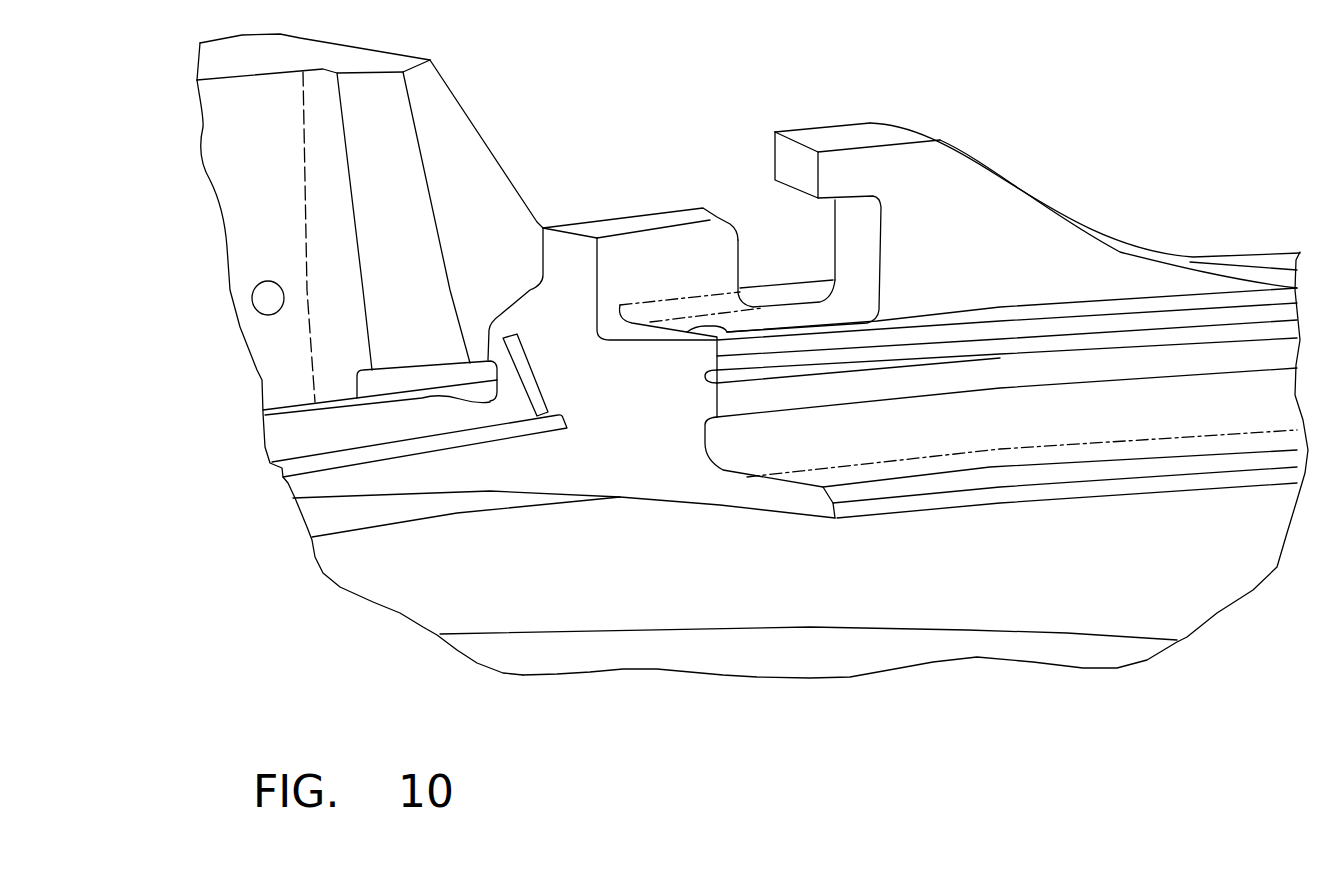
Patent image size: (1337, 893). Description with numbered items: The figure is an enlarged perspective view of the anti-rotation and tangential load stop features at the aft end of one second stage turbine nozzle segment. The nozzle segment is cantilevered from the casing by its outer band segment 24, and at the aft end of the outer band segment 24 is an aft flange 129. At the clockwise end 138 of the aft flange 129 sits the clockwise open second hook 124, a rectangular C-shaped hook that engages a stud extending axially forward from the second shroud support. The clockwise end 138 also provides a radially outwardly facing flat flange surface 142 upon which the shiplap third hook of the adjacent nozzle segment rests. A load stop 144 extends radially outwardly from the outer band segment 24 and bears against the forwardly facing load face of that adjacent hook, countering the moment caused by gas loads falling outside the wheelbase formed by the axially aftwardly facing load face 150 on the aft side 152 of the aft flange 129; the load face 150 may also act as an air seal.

The outer band segment 24 is at (707, 480).
The clockwise open second hook 124 is at (870, 143).
The aft flange 129 is at (1167, 258).
The clockwise end 138 is at (703, 363).
The radially outwardly facing flat flange surface 142 is at (690, 333).
The load stop 144 is at (660, 222).
The axially aftwardly facing load face 150 is at (1037, 330).
The aft side 152 is at (862, 402).